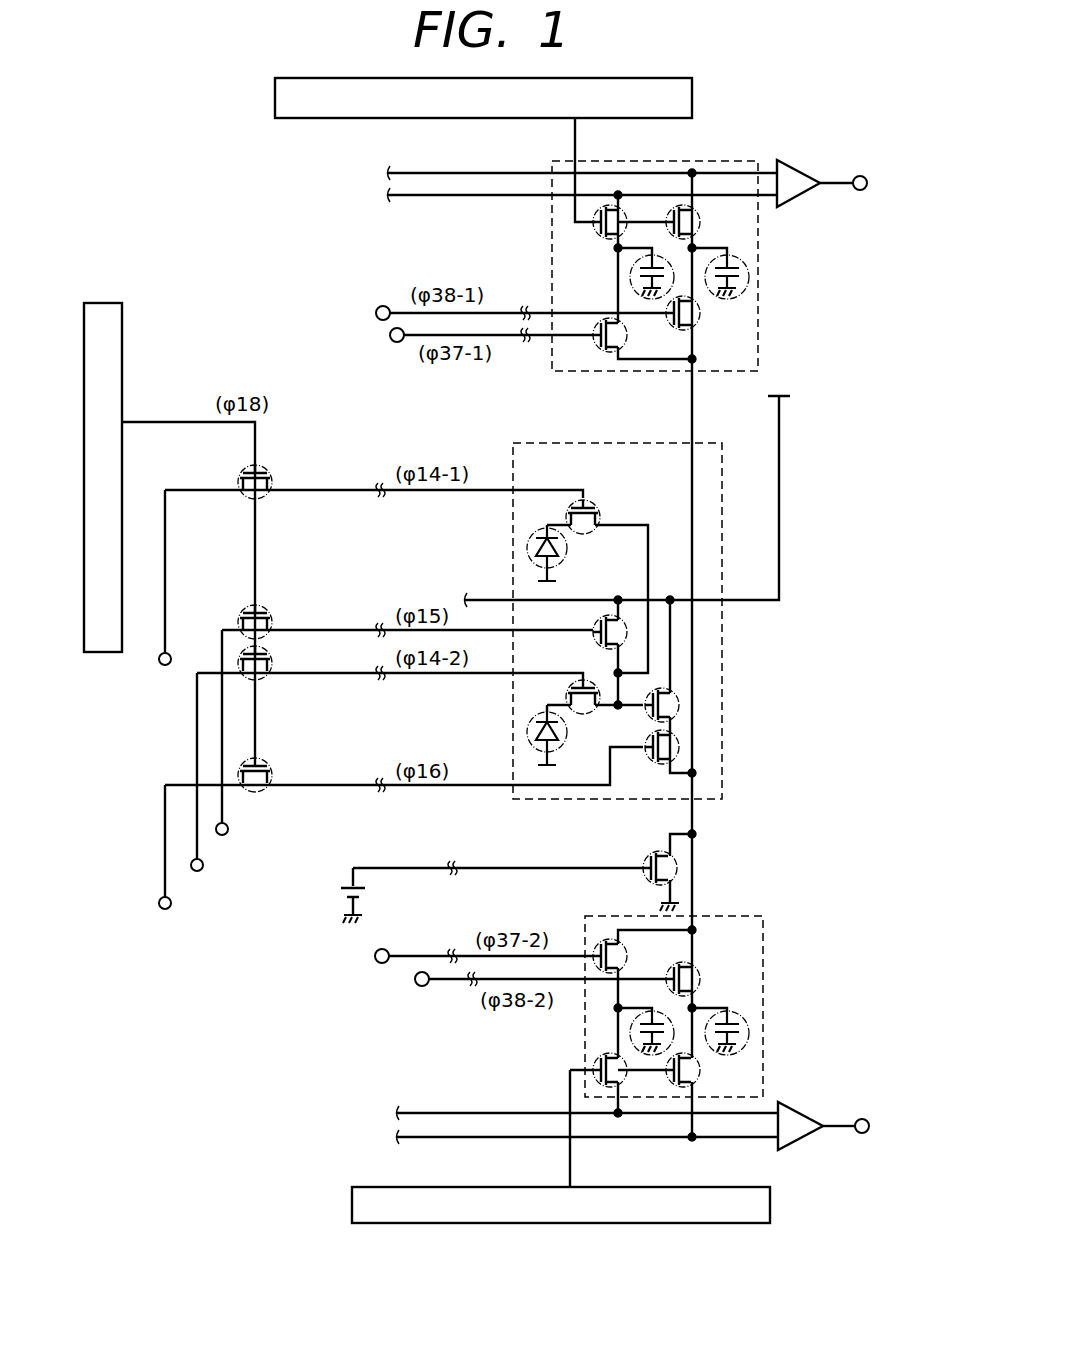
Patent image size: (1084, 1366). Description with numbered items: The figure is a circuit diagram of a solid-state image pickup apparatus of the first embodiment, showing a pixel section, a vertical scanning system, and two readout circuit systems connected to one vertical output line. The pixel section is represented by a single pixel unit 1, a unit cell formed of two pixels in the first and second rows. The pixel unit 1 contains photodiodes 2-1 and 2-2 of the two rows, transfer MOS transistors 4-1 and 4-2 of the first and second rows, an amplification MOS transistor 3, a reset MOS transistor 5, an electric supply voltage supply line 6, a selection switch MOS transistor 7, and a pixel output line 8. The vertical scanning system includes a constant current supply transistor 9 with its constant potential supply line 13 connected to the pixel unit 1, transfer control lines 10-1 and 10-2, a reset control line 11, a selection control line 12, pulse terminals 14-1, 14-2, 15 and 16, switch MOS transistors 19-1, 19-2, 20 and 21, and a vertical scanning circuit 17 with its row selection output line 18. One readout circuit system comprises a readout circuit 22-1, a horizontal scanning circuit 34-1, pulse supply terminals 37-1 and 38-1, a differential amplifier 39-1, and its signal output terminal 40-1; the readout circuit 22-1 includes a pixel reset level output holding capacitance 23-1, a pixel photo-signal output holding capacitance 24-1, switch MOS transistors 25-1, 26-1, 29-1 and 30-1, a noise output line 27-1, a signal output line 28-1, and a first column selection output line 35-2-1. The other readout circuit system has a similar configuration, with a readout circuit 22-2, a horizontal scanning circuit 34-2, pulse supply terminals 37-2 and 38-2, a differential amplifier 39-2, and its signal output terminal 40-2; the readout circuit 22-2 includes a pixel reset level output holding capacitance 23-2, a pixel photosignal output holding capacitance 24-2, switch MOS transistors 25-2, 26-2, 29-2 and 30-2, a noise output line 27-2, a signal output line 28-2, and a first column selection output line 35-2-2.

The pixel unit 1 is at (615, 443).
The photodiode 2-1 is at (560, 555).
The photodiode 2-2 is at (530, 730).
The amplification MOS transistor 3 is at (680, 705).
The transfer MOS transistor 4-1 is at (595, 505).
The transfer MOS transistor 4-2 is at (568, 700).
The reset MOS transistor 5 is at (597, 622).
The electric supply voltage supply line 6 is at (779, 520).
The selection switch MOS transistor 7 is at (680, 747).
The pixel output line 8 is at (692, 497).
The constant current supply transistor 9 is at (647, 858).
The transfer control line 10-1 is at (314, 489).
The transfer control line 10-2 is at (330, 674).
The reset control line 11 is at (314, 630).
The selection control line 12 is at (310, 785).
The constant potential supply line 13 is at (505, 868).
The pulse terminal 14-1 is at (164, 667).
The pulse terminal 14-2 is at (202, 871).
The pulse terminal 15 is at (227, 834).
The pulse terminal 16 is at (164, 910).
The vertical scanning circuit 17 is at (104, 302).
The row selection output line 18 is at (178, 420).
The switch MOS transistor 19-1 is at (263, 492).
The switch MOS transistor 19-2 is at (263, 676).
The switch MOS transistor 20 is at (246, 615).
The switch MOS transistor 21 is at (262, 788).
The readout circuit 22-1 is at (760, 344).
The readout circuit 22-2 is at (732, 916).
The pixel reset level output holding capacitance 23-1 is at (632, 285).
The pixel reset level output holding capacitance 23-2 is at (632, 1028).
The pixel photo-signal output holding capacitance 24-1 is at (741, 285).
The pixel photosignal output holding capacitance 24-2 is at (745, 1028).
The switch MOS transistor 25-1 is at (592, 361).
The switch MOS transistor 25-2 is at (600, 941).
The switch MOS transistor 26-1 is at (696, 316).
The switch MOS transistor 26-2 is at (700, 978).
The noise output line 27-1 is at (420, 199).
The noise output line 27-2 is at (420, 1112).
The signal output line 28-1 is at (420, 172).
The signal output line 28-2 is at (418, 1138).
The switch MOS transistor 29-1 is at (595, 230).
The switch MOS transistor 29-2 is at (595, 1078).
The switch MOS transistor 30-1 is at (696, 221).
The switch MOS transistor 30-2 is at (696, 1070).
The horizontal scanning circuit 34-1 is at (692, 90).
The horizontal scanning circuit 34-2 is at (770, 1205).
The first column selection output line 35-2-1 is at (575, 140).
The first column selection output line 35-2-2 is at (570, 1163).
The pulse supply terminal 37-1 is at (390, 338).
The pulse supply terminal 37-2 is at (375, 956).
The pulse supply terminal 38-1 is at (376, 313).
The pulse supply terminal 38-2 is at (415, 985).
The differential amplifier 39-1 is at (800, 160).
The differential amplifier 39-2 is at (805, 1148).
The signal output terminal 40-1 is at (864, 176).
The signal output terminal 40-2 is at (870, 1118).